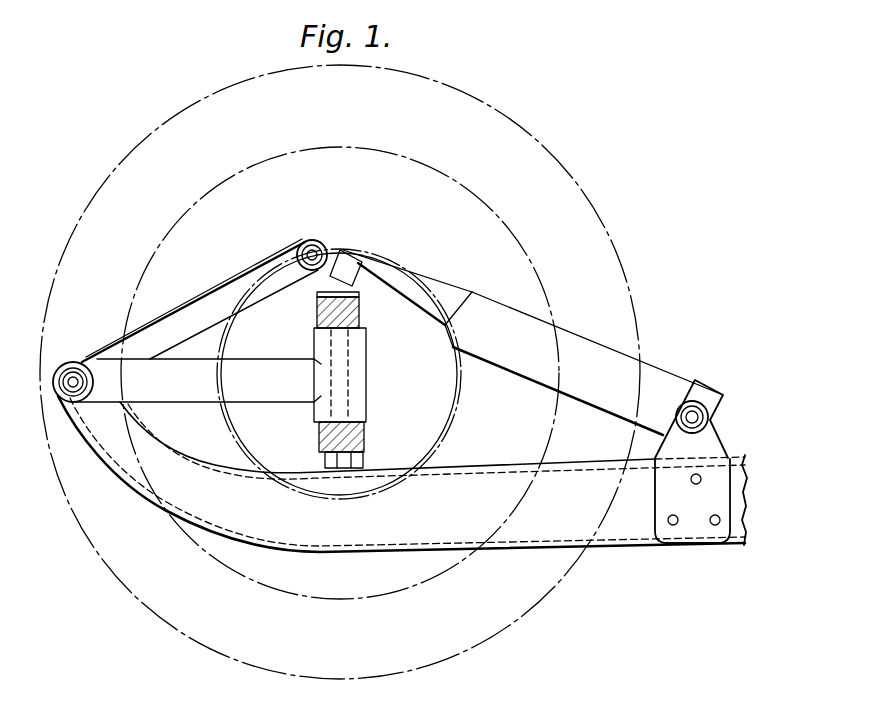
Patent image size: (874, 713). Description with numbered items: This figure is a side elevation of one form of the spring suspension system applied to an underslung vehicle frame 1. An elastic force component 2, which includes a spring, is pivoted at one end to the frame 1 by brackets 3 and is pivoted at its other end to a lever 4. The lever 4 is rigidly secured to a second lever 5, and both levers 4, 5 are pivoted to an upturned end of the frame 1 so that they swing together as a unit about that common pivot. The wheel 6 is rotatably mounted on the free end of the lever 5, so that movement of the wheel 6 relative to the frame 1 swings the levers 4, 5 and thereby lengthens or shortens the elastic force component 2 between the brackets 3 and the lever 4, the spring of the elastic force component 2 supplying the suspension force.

The frame 1 is at (197, 488).
The elastic force component 2 is at (522, 345).
The brackets 3 is at (692, 502).
The lever 4 is at (213, 318).
The lever 5 is at (202, 382).
The wheel 6 is at (530, 610).